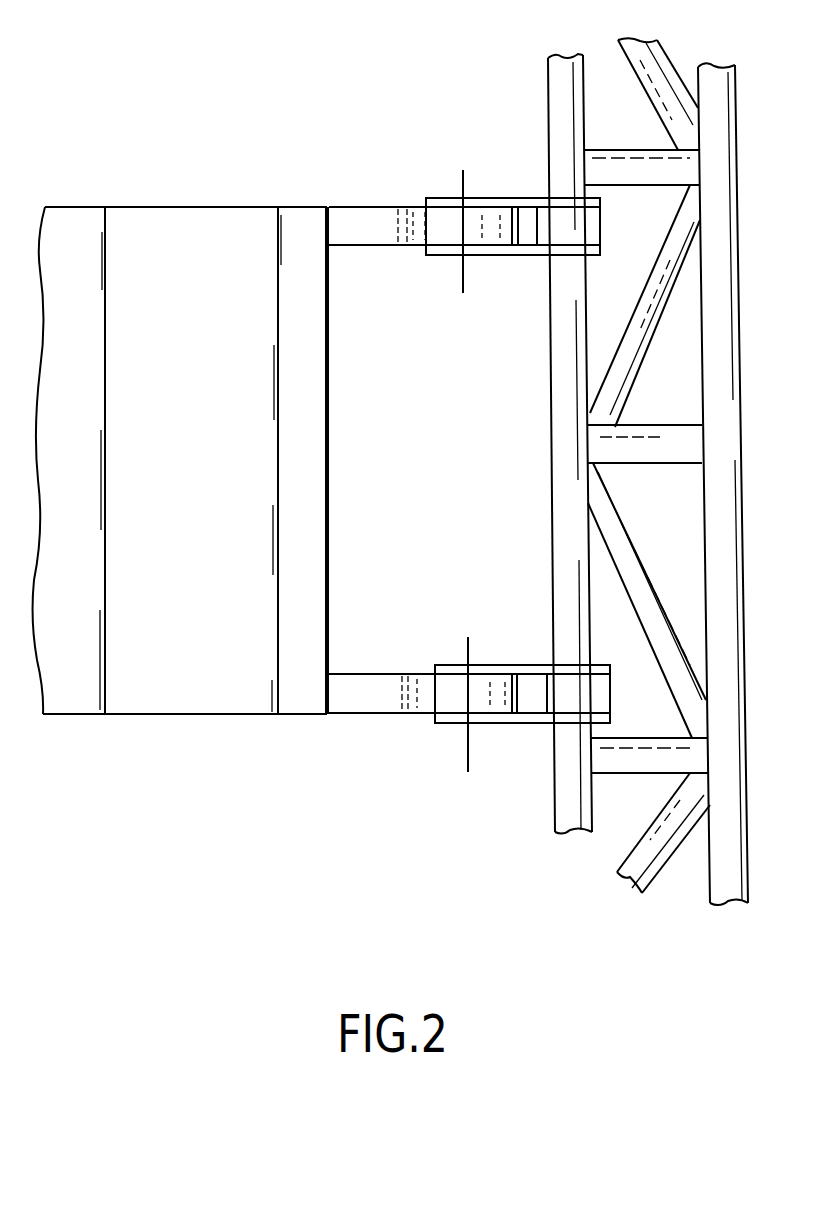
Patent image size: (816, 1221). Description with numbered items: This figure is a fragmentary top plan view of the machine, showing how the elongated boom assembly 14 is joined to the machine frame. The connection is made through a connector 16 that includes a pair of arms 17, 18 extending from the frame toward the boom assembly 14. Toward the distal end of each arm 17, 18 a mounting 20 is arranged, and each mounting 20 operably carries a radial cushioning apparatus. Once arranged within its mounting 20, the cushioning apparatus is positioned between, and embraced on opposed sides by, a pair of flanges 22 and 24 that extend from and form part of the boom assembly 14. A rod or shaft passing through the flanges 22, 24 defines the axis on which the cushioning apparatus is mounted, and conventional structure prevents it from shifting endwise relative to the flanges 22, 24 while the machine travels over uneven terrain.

The boom assembly 14 is at (532, 68).
The connector 16 is at (167, 188).
The arm 17 is at (355, 707).
The arm 18 is at (358, 235).
The mounting 20 is at (427, 232).
The flange 22 is at (510, 257).
The flange 24 is at (523, 197).